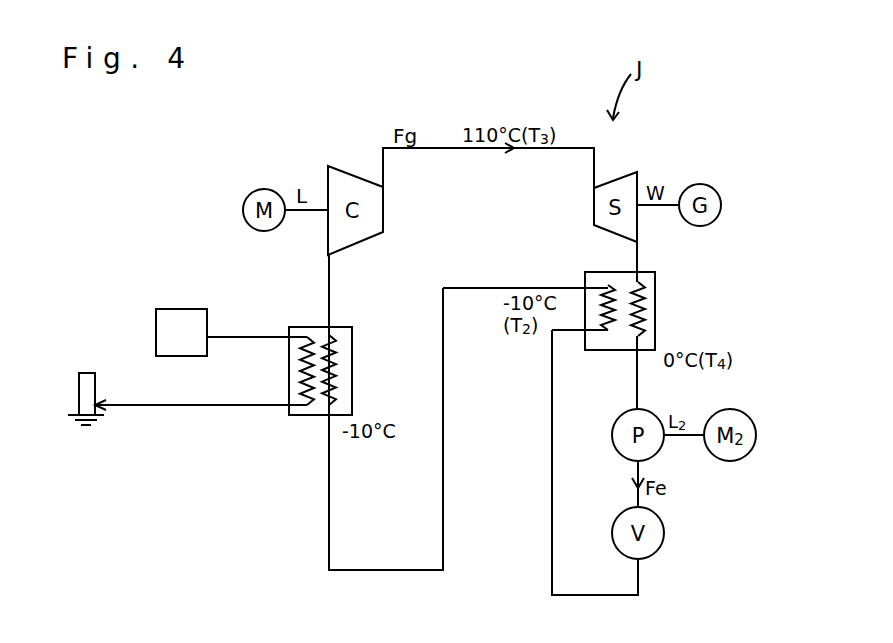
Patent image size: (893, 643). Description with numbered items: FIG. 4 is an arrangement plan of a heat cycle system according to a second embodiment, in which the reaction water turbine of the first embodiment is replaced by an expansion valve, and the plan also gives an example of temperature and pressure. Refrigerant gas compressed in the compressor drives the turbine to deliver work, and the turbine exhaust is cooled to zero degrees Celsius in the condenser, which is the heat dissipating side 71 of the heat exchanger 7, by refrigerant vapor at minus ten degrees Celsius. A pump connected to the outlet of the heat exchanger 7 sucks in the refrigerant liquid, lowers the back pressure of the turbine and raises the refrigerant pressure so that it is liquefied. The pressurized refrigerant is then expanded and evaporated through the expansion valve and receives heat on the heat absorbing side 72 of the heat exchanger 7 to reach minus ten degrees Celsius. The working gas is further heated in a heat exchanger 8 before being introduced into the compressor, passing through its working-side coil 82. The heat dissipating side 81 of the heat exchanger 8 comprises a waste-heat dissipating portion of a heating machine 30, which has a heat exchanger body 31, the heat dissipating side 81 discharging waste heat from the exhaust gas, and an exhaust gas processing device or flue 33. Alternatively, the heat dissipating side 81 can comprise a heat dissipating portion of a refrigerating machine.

The heat exchanger 7 is at (655, 290).
The heat dissipating side of the heat exchanger 71 is at (638, 318).
The heat absorbing side of the heat exchanger 72 is at (622, 326).
The heat exchanger 8 is at (352, 336).
The heat dissipating side of the heat exchanger 81 is at (307, 337).
The working fluid passage coil 82 is at (337, 370).
The heating machine 30 is at (235, 325).
The heat exchanger body 31 is at (172, 315).
The exhaust gas processing device or flue 33 is at (85, 373).